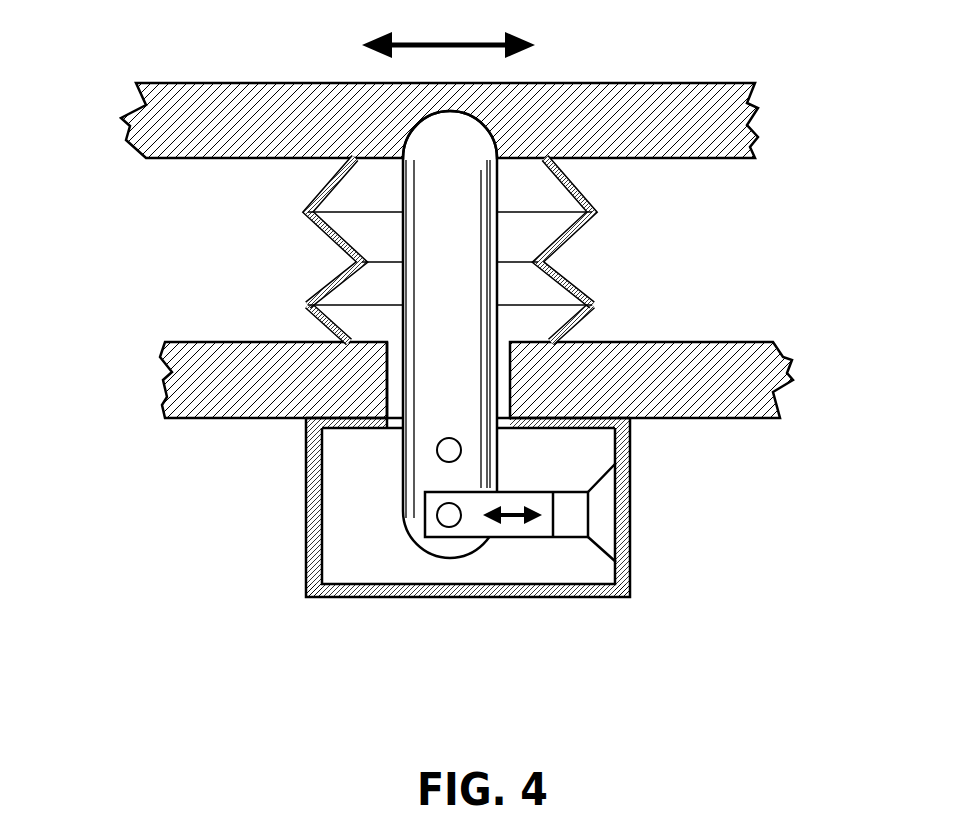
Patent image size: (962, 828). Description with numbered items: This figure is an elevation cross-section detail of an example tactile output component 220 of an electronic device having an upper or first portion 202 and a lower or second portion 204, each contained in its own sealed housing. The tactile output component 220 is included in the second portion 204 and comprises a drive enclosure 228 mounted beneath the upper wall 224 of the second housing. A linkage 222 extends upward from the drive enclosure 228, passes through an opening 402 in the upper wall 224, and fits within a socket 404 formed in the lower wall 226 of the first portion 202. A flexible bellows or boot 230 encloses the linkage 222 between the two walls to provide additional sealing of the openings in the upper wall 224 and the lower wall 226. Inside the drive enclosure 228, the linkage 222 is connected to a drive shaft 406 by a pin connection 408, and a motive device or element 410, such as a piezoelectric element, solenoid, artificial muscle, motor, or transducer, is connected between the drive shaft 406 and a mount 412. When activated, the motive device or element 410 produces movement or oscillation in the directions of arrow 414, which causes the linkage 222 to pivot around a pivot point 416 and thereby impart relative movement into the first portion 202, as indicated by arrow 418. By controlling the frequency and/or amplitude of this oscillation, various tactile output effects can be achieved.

The first portion 202 is at (533, 141).
The second portion 204 is at (542, 360).
The tactile output component 220 is at (389, 373).
The linkage 222 is at (497, 255).
The upper wall 224 is at (202, 342).
The lower wall 226 is at (215, 160).
The drive enclosure 228 is at (306, 536).
The flexible bellows or boot 230 is at (492, 250).
The opening 402 is at (505, 342).
The socket 404 is at (459, 334).
The drive shaft 406 is at (506, 523).
The pin connection 408 is at (437, 522).
The motive device or element 410 is at (573, 538).
The mount 412 is at (603, 552).
The arrow 414 is at (524, 505).
The pivot point 416 is at (437, 452).
The arrow 418 is at (434, 40).